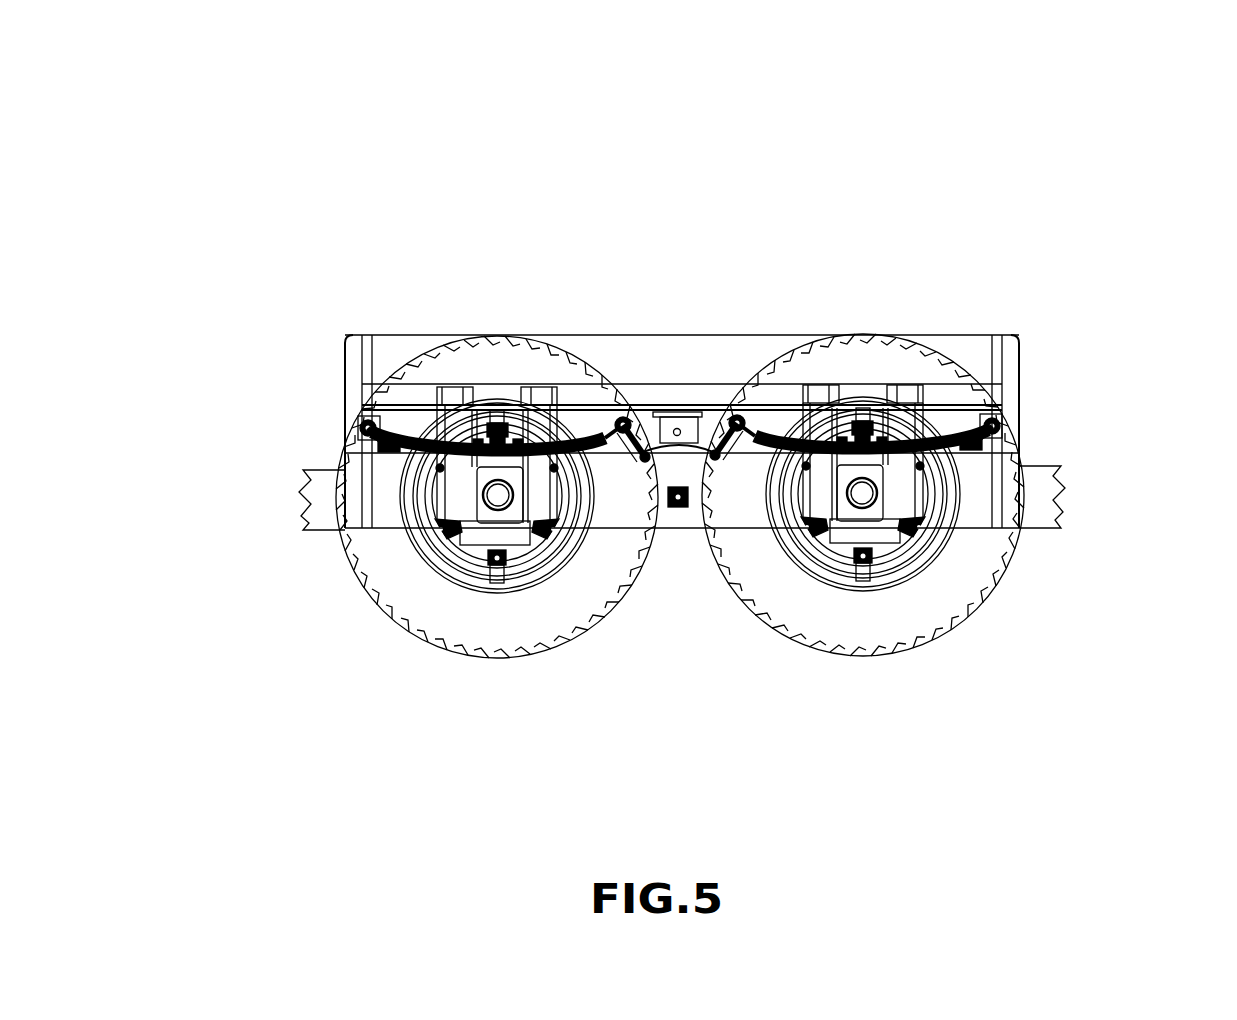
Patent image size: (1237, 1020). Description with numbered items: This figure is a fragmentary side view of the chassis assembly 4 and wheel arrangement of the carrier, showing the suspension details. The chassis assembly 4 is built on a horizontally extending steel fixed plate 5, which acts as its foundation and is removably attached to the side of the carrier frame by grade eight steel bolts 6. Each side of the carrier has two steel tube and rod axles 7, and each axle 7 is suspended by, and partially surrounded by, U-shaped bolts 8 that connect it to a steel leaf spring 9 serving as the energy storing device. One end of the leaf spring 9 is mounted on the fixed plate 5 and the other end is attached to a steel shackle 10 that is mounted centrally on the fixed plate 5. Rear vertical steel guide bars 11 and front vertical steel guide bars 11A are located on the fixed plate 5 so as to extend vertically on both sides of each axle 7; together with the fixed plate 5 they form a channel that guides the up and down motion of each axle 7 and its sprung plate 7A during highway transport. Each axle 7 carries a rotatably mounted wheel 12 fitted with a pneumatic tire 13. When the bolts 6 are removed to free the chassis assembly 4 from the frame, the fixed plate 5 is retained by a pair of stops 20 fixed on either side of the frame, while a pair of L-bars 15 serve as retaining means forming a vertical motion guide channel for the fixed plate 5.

The chassis assembly 4 is at (700, 410).
The fixed plate 5 is at (668, 398).
The fixed plate fastener means 6 is at (372, 446).
The axle 7 is at (443, 525).
The sprung plate 7A is at (513, 523).
The axle fastener means 8 is at (560, 535).
The energy storing device 9 is at (377, 388).
The restraint means 10 is at (639, 442).
The vertical guide, rear 11 is at (548, 387).
The vertical guide, front 11A is at (459, 387).
The wheel 12 is at (460, 617).
The tire 13 is at (363, 595).
The restraining means comprising fixed plate channel 15 is at (362, 393).
The stops restraining fixed plate 20 is at (496, 496).